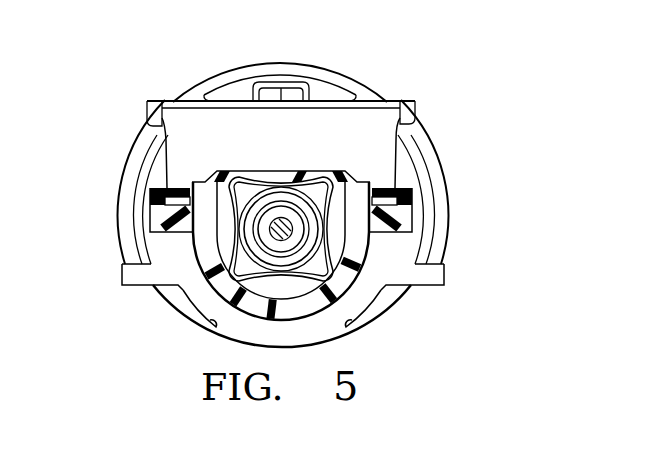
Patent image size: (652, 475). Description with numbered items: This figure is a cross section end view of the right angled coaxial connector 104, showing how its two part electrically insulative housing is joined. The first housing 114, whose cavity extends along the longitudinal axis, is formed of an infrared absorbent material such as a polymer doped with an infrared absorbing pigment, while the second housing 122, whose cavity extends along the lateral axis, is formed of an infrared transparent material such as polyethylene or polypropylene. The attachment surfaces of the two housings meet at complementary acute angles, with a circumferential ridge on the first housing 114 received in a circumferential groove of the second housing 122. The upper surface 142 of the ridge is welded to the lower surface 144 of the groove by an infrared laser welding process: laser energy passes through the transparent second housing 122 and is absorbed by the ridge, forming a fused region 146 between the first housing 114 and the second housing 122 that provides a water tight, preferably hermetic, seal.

The right angled coaxial connector 104 is at (376, 50).
The first housing 114 is at (166, 105).
The second housing 122 is at (365, 128).
The upper surface 142 is at (163, 213).
The lower surface 144 is at (177, 187).
The fused region 146 is at (157, 193).